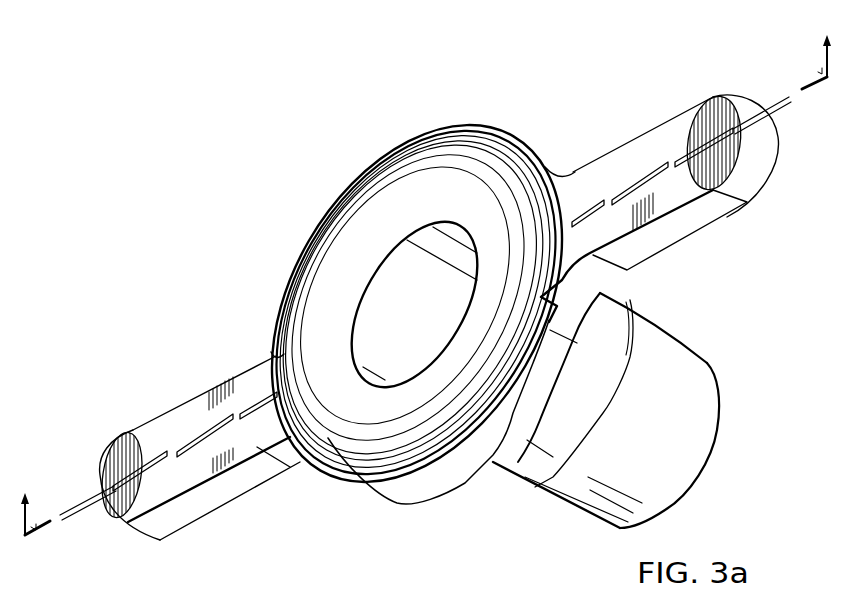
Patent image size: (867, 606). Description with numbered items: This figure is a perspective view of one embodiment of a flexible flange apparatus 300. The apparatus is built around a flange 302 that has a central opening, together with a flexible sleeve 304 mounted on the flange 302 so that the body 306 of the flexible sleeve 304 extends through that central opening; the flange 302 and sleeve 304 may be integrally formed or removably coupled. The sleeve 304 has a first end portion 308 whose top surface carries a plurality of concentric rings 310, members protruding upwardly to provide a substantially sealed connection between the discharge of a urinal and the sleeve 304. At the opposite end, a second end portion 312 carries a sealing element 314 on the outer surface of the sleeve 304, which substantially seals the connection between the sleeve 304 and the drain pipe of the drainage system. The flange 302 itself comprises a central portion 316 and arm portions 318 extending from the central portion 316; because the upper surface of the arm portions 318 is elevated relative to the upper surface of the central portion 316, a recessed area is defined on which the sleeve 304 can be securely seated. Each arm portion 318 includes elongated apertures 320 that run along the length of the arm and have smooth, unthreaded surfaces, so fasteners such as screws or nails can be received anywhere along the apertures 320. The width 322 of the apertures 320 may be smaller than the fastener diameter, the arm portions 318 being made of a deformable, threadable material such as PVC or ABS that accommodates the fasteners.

The flexible flange apparatus 300 is at (218, 97).
The flange 302 is at (517, 88).
The flexible sleeve 304 is at (556, 524).
The body 306 is at (603, 393).
The first end portion 308 is at (370, 158).
The concentric ring 310 is at (313, 237).
The second end portion 312 is at (712, 477).
The sealing element 314 is at (653, 332).
The central portion 316 is at (437, 488).
The arm portions 318 is at (578, 178).
The apertures 320 is at (628, 186).
The width 322 is at (747, 87).